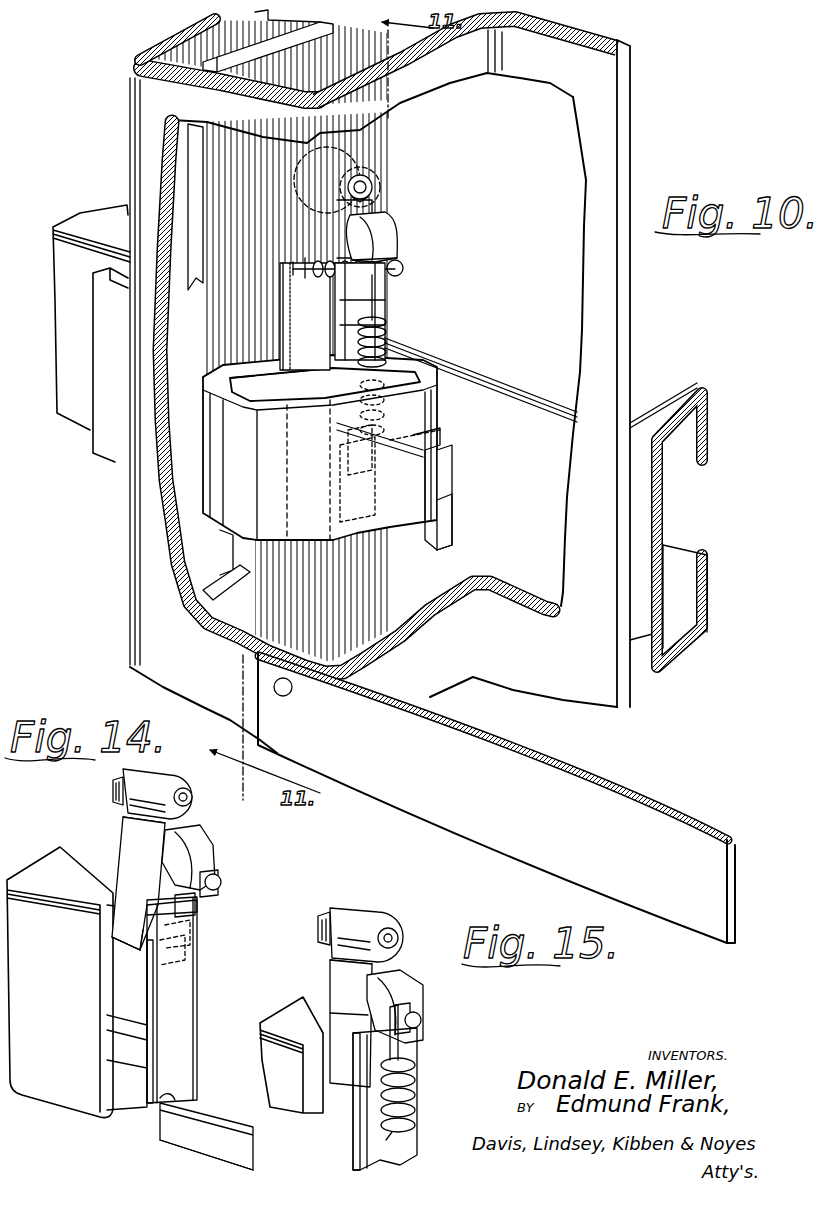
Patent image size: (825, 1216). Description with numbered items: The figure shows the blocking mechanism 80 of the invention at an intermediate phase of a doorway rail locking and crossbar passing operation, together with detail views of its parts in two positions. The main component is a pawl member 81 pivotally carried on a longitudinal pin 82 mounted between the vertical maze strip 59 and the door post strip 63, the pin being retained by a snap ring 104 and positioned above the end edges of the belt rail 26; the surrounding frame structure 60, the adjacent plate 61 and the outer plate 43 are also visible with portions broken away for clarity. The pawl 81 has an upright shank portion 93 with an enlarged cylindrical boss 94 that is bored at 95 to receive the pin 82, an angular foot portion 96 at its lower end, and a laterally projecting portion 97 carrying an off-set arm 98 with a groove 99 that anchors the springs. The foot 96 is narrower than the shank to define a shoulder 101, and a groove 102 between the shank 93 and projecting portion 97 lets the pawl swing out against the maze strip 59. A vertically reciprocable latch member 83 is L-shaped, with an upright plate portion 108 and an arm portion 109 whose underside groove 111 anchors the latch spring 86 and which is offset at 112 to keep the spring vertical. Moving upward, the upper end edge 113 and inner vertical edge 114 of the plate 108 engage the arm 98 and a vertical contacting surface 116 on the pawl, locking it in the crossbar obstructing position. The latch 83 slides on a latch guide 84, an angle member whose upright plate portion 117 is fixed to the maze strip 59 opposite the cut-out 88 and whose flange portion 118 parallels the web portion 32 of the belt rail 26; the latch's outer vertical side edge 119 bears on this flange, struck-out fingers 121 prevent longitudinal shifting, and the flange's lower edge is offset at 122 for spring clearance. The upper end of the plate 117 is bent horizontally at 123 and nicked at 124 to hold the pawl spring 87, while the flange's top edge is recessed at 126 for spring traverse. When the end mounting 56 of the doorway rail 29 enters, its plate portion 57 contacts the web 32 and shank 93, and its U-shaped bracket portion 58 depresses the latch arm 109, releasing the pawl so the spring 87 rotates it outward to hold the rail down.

In FIG. 10, the belt rail 26 is at (670, 375).
In FIG. 10, the doorway rail 29 is at (100, 212).
In FIG. 14, the doorway rail 29 is at (38, 880).
In FIG. 15, the doorway rail 29 is at (276, 1022).
In FIG. 10, the web portion 32 is at (647, 509).
In FIG. 10, the plate 43 is at (127, 558).
In FIG. 10, the end mounting 56 is at (203, 420).
In FIG. 10, the plate portion 57 is at (112, 477).
In FIG. 10, the U-shaped bracket portion 58 is at (216, 458).
In FIG. 10, the maze strip 59 is at (207, 230).
In FIG. 10, the frame member 60 is at (147, 96).
In FIG. 10, the frame plate 61 is at (595, 74).
In FIG. 10, the door post strip 63 is at (227, 50).
In FIG. 10, the blocking mechanism 80 is at (452, 259).
In FIG. 10, the pawl member 81 is at (398, 158).
In FIG. 14, the pawl member 81 is at (123, 826).
In FIG. 15, the pawl member 81 is at (333, 968).
In FIG. 10, the pin 82 is at (376, 182).
In FIG. 14, the pin 82 is at (113, 788).
In FIG. 15, the pin 82 is at (330, 918).
In FIG. 10, the latch member 83 is at (440, 506).
In FIG. 14, the latch member 83 is at (197, 1000).
In FIG. 15, the latch member 83 is at (357, 1140).
In FIG. 10, the latch guide 84 is at (303, 328).
In FIG. 10, the latch spring 86 is at (388, 330).
In FIG. 15, the latch spring 86 is at (415, 1100).
In FIG. 10, the pawl spring 87 is at (386, 250).
In FIG. 10, the cut-out 88 is at (307, 267).
In FIG. 10, the shank portion 93 is at (307, 238).
In FIG. 14, the shank portion 93 is at (135, 848).
In FIG. 15, the shank portion 93 is at (342, 988).
In FIG. 10, the cylindrical boss 94 is at (388, 146).
In FIG. 14, the cylindrical boss 94 is at (155, 768).
In FIG. 15, the cylindrical boss 94 is at (357, 910).
In FIG. 14, the bore 95 is at (185, 778).
In FIG. 15, the bore 95 is at (393, 928).
In FIG. 14, the foot portion 96 is at (185, 958).
In FIG. 10, the laterally projecting portion 97 is at (397, 238).
In FIG. 14, the laterally projecting portion 97 is at (200, 840).
In FIG. 15, the laterally projecting portion 97 is at (402, 975).
In FIG. 10, the off-set arm 98 is at (402, 266).
In FIG. 14, the off-set arm 98 is at (220, 884).
In FIG. 15, the off-set arm 98 is at (422, 1024).
In FIG. 14, the groove 99 is at (220, 870).
In FIG. 15, the groove 99 is at (415, 1010).
In FIG. 14, the shoulder 101 is at (140, 915).
In FIG. 14, the groove 102 is at (145, 885).
In FIG. 10, the snap ring 104 is at (378, 201).
In FIG. 14, the upright plate portion 108 is at (175, 1023).
In FIG. 15, the upright plate portion 108 is at (395, 1148).
In FIG. 10, the arm portion 109 is at (439, 529).
In FIG. 14, the arm portion 109 is at (235, 1130).
In FIG. 10, the groove 111 is at (360, 513).
In FIG. 14, the groove 111 is at (190, 1145).
In FIG. 14, the offset 112 is at (170, 1100).
In FIG. 14, the upper end edge 113 is at (175, 921).
In FIG. 15, the upper end edge 113 is at (360, 1022).
In FIG. 14, the inner vertical edge 114 is at (197, 937).
In FIG. 14, the vertical contacting surface 116 is at (195, 905).
In FIG. 15, the vertical contacting surface 116 is at (420, 1040).
In FIG. 10, the upright plate portion 117 is at (300, 362).
In FIG. 10, the flange portion 118 is at (382, 313).
In FIG. 10, the outer vertical side edge 119 is at (345, 410).
In FIG. 14, the outer vertical side edge 119 is at (150, 1000).
In FIG. 15, the outer vertical side edge 119 is at (357, 1108).
In FIG. 10, the struck-out fingers 121 is at (348, 455).
In FIG. 10, the offset 122 is at (445, 598).
In FIG. 10, the bent end 123 is at (350, 276).
In FIG. 10, the groove 124 is at (335, 271).
In FIG. 10, the recess 126 is at (400, 290).